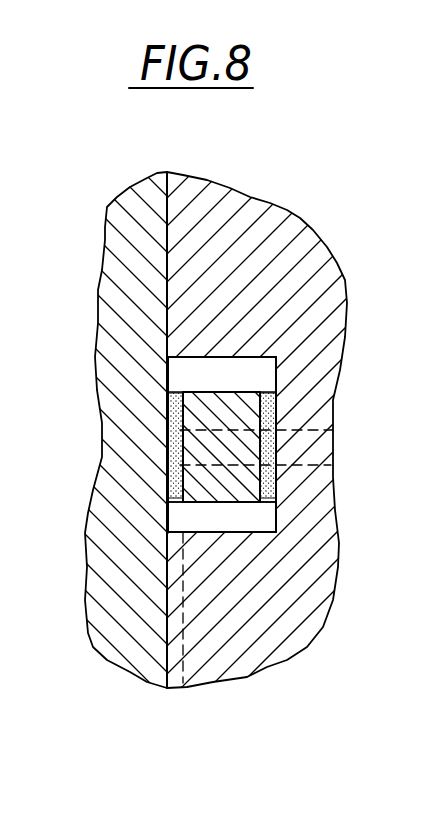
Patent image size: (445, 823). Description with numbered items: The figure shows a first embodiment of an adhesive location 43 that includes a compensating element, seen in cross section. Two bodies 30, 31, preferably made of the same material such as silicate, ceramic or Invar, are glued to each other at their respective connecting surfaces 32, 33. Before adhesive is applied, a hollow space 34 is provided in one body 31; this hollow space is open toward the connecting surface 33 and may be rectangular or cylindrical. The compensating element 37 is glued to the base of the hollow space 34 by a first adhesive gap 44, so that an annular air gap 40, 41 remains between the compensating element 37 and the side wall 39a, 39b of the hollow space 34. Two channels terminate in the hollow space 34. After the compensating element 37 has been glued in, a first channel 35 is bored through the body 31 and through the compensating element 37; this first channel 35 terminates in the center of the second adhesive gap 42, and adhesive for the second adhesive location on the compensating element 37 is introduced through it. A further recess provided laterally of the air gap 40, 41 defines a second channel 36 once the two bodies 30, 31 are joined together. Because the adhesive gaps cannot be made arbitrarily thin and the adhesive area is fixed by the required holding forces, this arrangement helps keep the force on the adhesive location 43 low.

The body 30 is at (122, 205).
The body 31 is at (272, 656).
The connecting surface 32 is at (165, 217).
The connecting surface 33 is at (170, 231).
The hollow space 34 is at (263, 515).
The first channel 35 is at (299, 463).
The second channel 36 is at (173, 663).
The compensating element 37 is at (197, 418).
The side wall 39a is at (257, 362).
The side wall 39b is at (232, 527).
The air gap 40 is at (190, 367).
The air gap 41 is at (187, 521).
The second adhesive gap 42 is at (177, 451).
The adhesive location 43 is at (216, 337).
The first adhesive gap 44 is at (273, 402).